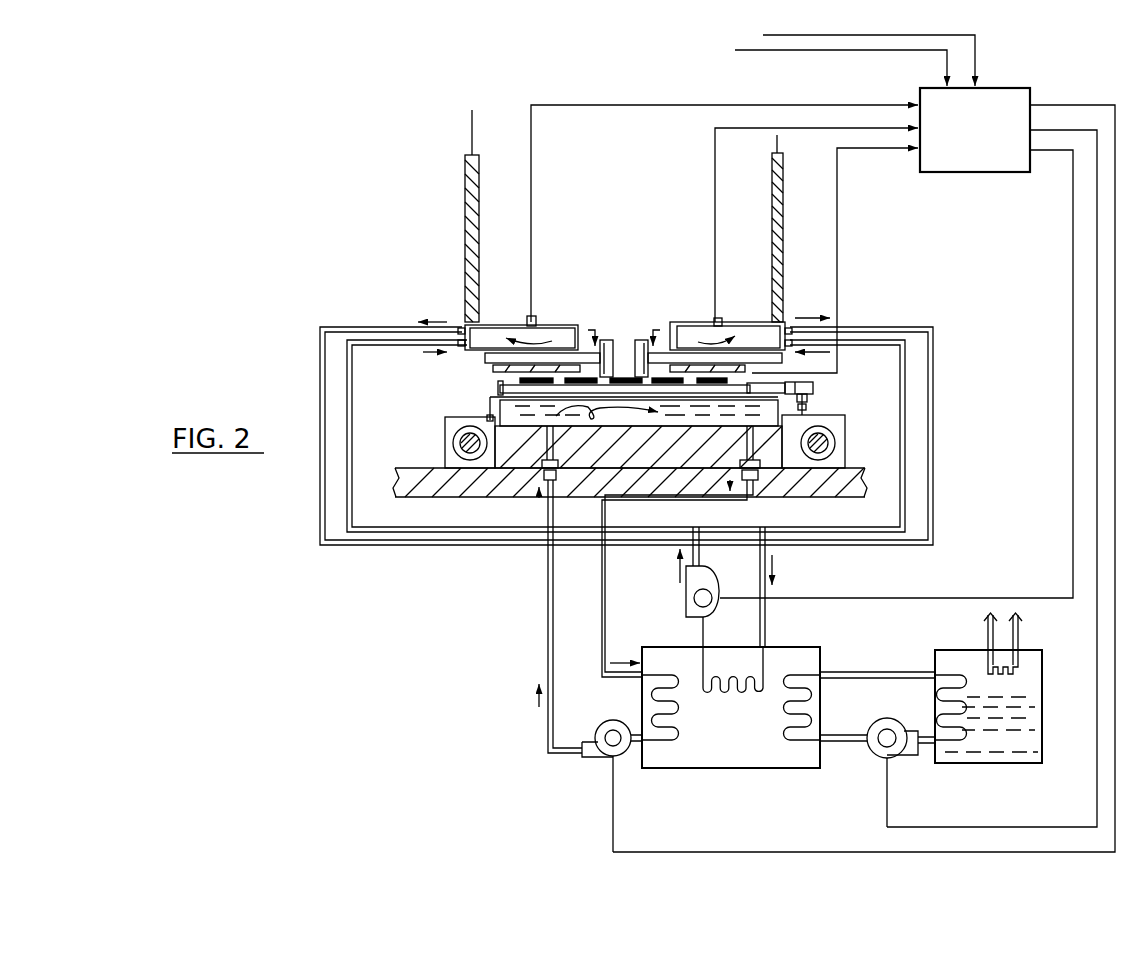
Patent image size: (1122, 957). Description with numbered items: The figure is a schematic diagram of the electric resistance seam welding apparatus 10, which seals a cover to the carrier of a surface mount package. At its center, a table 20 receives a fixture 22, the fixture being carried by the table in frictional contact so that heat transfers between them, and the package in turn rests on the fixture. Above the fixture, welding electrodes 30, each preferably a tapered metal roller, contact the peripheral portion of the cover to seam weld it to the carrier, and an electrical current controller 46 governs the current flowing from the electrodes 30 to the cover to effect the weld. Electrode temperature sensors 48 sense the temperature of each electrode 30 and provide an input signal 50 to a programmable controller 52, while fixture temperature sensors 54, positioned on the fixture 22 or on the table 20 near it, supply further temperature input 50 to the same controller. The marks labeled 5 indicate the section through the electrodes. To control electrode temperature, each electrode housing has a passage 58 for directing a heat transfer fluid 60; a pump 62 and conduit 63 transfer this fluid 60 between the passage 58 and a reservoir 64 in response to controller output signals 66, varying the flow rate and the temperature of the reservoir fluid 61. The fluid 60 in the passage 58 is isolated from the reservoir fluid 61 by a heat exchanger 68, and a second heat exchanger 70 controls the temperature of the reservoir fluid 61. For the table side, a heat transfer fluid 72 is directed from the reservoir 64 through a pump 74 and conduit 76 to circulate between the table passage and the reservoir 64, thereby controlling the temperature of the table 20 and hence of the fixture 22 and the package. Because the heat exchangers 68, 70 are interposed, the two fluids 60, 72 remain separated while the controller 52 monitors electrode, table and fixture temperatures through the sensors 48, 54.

The section line 5 is at (626, 321).
The electric resistance seam welding apparatus 10 is at (391, 180).
The table 20 is at (820, 415).
The fixture 22 is at (498, 388).
The welding electrodes 30 is at (657, 342).
The electrical current controller 46 is at (907, 150).
The electrode temperature sensors 48 is at (531, 316).
The input signal 50 is at (531, 235).
The programmable controller 52 is at (960, 172).
The fixture temperature sensors 54 is at (787, 395).
The passage 58 is at (565, 333).
The heat transfer fluid 60 is at (352, 390).
The reservoir fluid 61 is at (743, 754).
The pump 62 is at (686, 600).
The conduit 63 is at (420, 541).
The reservoir 64 is at (756, 709).
The controller output signals 66 is at (1050, 105).
The heat exchanger 68 is at (746, 769).
The second heat exchanger 70 is at (1012, 764).
The heat transfer fluid 72 is at (537, 427).
The pump 74 is at (595, 756).
The conduit 76 is at (553, 668).